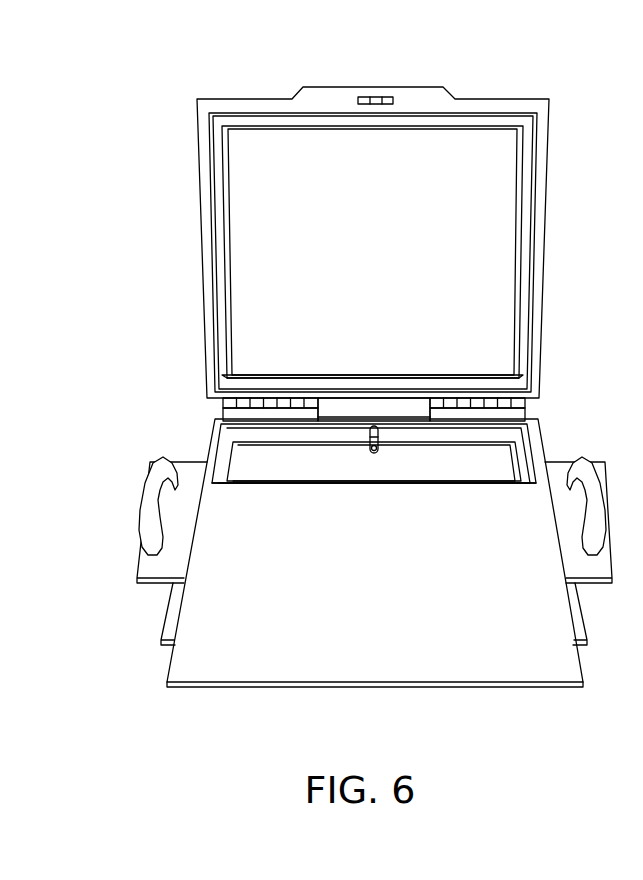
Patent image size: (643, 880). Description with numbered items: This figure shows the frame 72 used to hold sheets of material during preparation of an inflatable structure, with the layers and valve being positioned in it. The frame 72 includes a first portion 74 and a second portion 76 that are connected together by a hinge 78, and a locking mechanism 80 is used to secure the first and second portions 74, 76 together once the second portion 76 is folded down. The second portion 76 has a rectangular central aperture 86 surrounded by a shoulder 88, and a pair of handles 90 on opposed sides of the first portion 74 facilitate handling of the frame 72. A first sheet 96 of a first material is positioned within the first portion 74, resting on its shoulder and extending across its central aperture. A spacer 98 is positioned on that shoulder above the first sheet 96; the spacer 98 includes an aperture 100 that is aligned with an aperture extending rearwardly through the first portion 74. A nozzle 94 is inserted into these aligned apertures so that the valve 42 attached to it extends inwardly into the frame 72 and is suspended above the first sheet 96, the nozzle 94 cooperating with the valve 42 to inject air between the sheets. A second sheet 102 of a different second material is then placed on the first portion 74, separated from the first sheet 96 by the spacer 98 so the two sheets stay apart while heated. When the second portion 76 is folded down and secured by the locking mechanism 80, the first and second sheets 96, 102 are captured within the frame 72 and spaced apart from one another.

The frame 72 is at (372, 409).
The first portion 74 is at (364, 553).
The second portion 76 is at (373, 221).
The hinge 78 is at (222, 414).
The locking mechanism 80 is at (381, 96).
The central aperture 86 is at (473, 128).
The shoulder 88 is at (292, 373).
The handles 90 is at (158, 483).
The nozzle 94 is at (372, 442).
The first sheet 96 is at (475, 465).
The spacer 98 is at (258, 435).
The aperture 100 is at (387, 428).
The valve 42 is at (382, 470).
The second sheet 102 is at (353, 578).